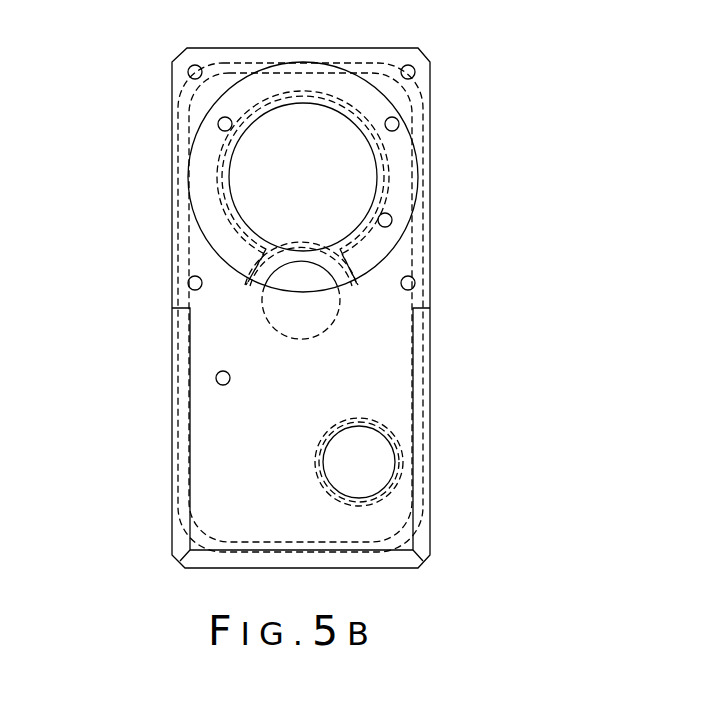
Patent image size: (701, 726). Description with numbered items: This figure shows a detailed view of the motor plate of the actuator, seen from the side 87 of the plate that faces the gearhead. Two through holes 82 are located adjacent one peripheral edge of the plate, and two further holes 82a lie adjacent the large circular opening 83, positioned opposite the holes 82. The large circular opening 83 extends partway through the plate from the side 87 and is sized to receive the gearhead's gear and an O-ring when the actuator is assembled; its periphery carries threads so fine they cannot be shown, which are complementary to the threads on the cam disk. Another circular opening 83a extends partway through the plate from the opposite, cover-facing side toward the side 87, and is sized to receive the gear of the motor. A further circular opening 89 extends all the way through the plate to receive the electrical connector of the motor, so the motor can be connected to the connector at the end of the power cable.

The through holes 82 is at (188, 72).
The holes 82a is at (188, 284).
The large circular opening 83 is at (391, 216).
The circular opening 83a is at (285, 312).
The side 87 is at (387, 373).
The circular opening 89 is at (375, 473).